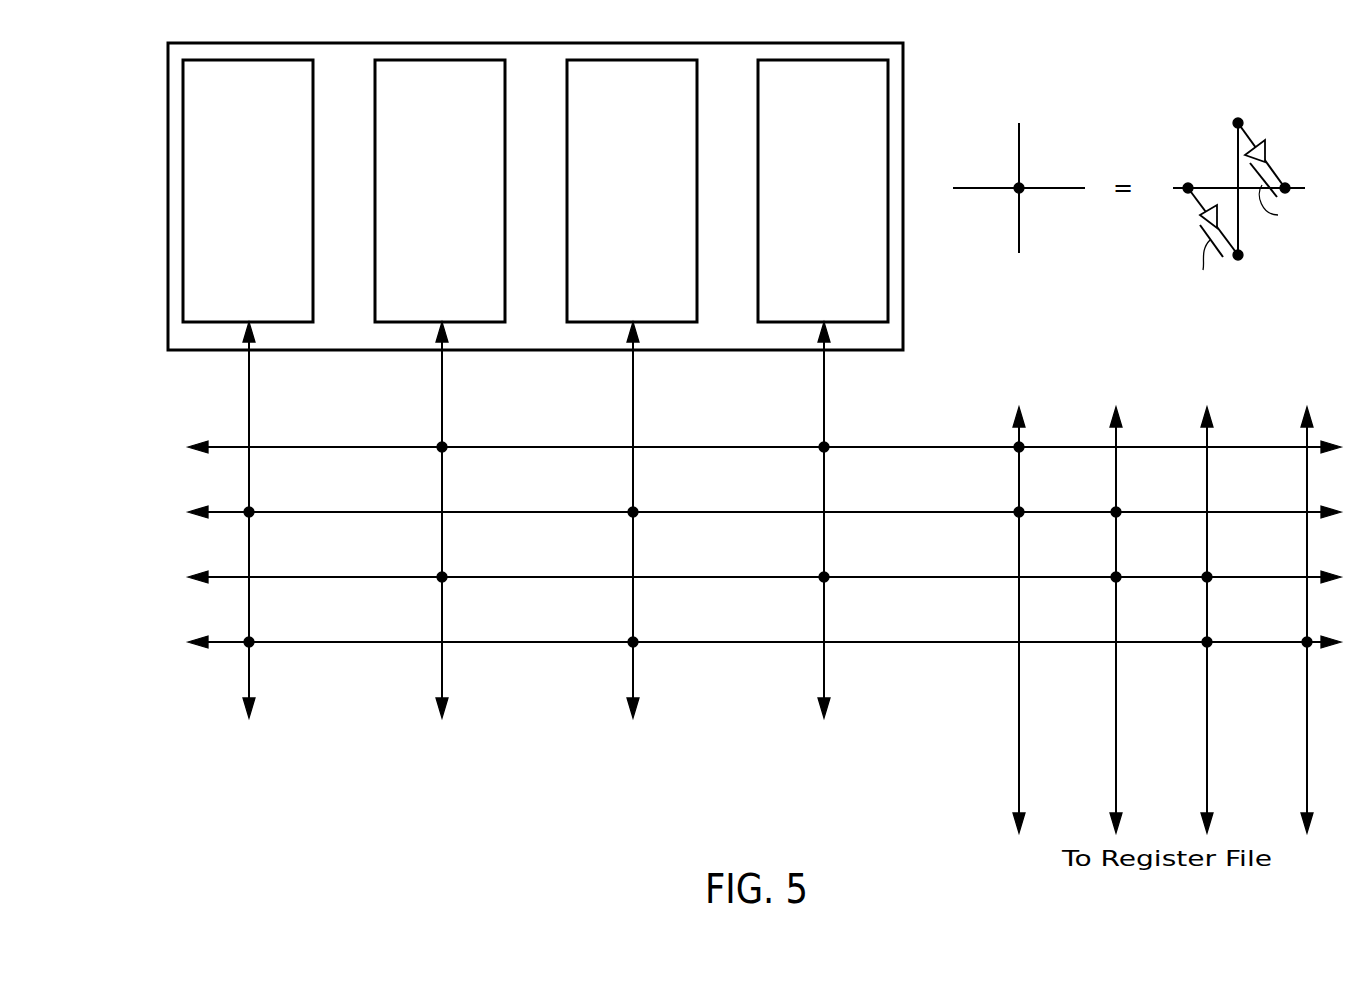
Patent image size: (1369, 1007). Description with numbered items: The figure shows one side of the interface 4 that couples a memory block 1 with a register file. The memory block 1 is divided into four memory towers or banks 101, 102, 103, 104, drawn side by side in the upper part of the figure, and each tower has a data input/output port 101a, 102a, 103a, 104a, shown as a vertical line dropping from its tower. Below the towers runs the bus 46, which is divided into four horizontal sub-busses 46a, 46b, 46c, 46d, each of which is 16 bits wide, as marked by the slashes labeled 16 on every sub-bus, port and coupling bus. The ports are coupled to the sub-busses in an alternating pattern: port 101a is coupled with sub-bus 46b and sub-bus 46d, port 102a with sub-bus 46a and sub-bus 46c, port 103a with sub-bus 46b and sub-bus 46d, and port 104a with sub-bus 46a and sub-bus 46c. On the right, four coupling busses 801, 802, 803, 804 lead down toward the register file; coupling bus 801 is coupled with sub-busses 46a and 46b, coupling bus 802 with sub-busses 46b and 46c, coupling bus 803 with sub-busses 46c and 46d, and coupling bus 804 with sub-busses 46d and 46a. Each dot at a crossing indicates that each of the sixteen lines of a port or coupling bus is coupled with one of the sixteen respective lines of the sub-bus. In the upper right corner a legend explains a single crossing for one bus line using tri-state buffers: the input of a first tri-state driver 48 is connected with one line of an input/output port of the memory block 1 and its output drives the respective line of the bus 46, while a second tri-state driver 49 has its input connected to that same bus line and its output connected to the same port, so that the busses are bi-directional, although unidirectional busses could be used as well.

The memory block 1 is at (906, 316).
The interface 4 is at (720, 775).
The 16 bit width 16 is at (547, 438).
The bus 46 is at (737, 561).
The sub-bus 46a is at (308, 450).
The sub-bus 46b is at (310, 515).
The sub-bus 46c is at (312, 580).
The sub-bus 46d is at (316, 645).
The first tri-state driver 48 is at (1265, 153).
The second tri-state driver 49 is at (1198, 215).
The memory tower 101 is at (268, 240).
The memory tower 102 is at (460, 240).
The memory tower 103 is at (652, 240).
The memory tower 104 is at (843, 240).
The data input/output port 101a is at (251, 388).
The data input/output port 102a is at (444, 388).
The data input/output port 103a is at (635, 388).
The data input/output port 104a is at (826, 388).
The coupling bus 801 is at (1019, 772).
The coupling bus 802 is at (1116, 772).
The coupling bus 803 is at (1207, 772).
The coupling bus 804 is at (1307, 772).